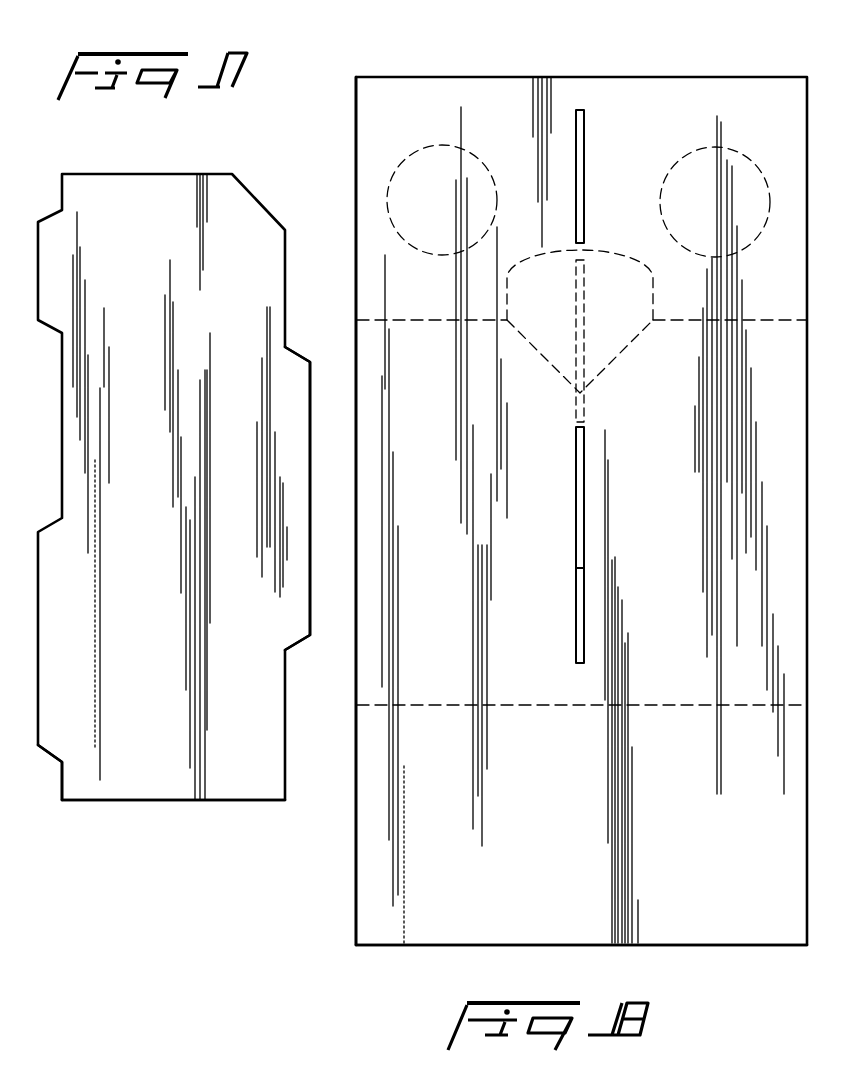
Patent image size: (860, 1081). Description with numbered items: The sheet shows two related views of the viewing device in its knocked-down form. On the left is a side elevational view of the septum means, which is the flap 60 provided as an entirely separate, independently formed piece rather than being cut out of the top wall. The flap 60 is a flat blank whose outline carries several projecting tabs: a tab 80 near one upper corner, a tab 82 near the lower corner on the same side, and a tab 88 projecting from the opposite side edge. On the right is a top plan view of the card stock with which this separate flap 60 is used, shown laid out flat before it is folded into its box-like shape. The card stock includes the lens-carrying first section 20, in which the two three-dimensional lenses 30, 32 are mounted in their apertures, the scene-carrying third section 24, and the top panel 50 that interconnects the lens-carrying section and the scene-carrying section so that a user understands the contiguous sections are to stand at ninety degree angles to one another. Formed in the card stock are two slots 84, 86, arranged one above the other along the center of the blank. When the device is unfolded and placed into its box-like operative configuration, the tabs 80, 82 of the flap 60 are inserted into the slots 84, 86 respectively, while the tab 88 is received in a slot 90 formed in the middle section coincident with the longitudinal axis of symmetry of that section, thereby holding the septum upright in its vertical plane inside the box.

In FIG. 18, the first section 20 is at (668, 102).
In FIG. 18, the third section 24 is at (700, 920).
In FIG. 18, the 3-D lens 30 is at (417, 153).
In FIG. 18, the 3-D lens 32 is at (722, 163).
In FIG. 18, the top panel 50 is at (368, 416).
In FIG. 17, the flap 60 is at (167, 788).
In FIG. 17, the tab 80 is at (47, 227).
In FIG. 17, the tab 82 is at (52, 743).
In FIG. 18, the slot 84 is at (582, 155).
In FIG. 18, the slot 86 is at (581, 515).
In FIG. 17, the tab 88 is at (312, 537).
In FIG. 18, the slot 90 is at (581, 417).